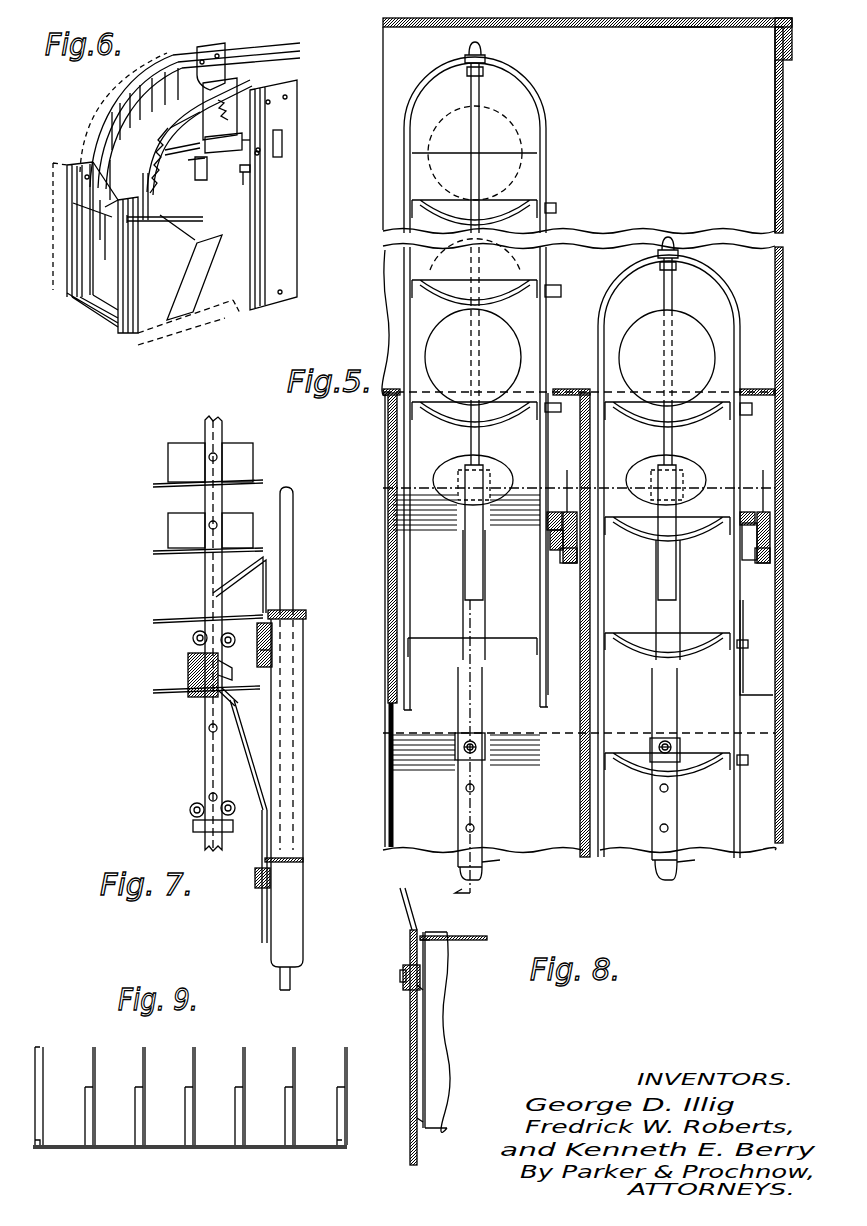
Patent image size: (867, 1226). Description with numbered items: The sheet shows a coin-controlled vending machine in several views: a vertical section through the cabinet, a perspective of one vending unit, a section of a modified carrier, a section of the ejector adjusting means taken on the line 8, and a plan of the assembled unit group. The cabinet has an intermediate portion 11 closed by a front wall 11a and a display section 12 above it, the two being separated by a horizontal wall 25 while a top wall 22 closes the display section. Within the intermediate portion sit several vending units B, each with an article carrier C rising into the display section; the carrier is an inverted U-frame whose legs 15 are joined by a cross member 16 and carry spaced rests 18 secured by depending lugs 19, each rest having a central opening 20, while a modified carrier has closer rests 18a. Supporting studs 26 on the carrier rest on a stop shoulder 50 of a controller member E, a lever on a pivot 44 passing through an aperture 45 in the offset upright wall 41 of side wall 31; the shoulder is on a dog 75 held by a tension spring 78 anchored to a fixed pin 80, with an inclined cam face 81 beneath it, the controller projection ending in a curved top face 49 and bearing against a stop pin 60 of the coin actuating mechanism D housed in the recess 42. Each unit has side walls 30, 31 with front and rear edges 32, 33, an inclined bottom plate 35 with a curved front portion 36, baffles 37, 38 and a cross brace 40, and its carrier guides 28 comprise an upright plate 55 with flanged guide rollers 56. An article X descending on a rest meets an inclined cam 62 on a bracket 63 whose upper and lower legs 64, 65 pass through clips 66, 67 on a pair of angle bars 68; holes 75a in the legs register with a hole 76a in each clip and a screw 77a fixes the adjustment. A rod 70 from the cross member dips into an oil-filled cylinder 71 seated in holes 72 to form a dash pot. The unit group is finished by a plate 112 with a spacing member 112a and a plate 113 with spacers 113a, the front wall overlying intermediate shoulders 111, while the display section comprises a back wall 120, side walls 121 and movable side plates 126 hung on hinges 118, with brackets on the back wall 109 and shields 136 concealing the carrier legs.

In FIG. 5, the section line 8 is at (471, 753).
In FIG. 8, the section line 8 is at (470, 883).
In FIG. 5, the intermediate portion 11 is at (790, 612).
In FIG. 9, the front wall 11a is at (213, 1148).
In FIG. 5, the display section 12 is at (783, 185).
In FIG. 5, the legs 15 is at (730, 428).
In FIG. 7, the legs 15 is at (205, 428).
In FIG. 5, the cross member 16 is at (518, 78).
In FIG. 5, the rests 18 is at (505, 210).
In FIG. 7, the rests 18a is at (170, 615).
In FIG. 5, the depending lugs 19 is at (440, 300).
In FIG. 5, the central opening 20 is at (458, 275).
In FIG. 5, the top wall 22 is at (690, 27).
In FIG. 5, the horizontal wall 25 is at (568, 385).
In FIG. 5, the supporting studs 26 is at (613, 200).
In FIG. 7, the supporting studs 26 is at (217, 457).
In FIG. 5, the carrier guides 28 is at (758, 603).
In FIG. 7, the carrier guides 28 is at (193, 826).
In FIG. 6, the side wall 30 is at (104, 125).
In FIG. 5, the side wall 30 is at (580, 833).
In FIG. 7, the side wall 30 is at (354, 788).
In FIG. 9, the side wall 30 is at (145, 1105).
In FIG. 6, the side wall 31 is at (93, 100).
In FIG. 5, the side wall 31 is at (388, 800).
In FIG. 9, the side wall 31 is at (285, 1128).
In FIG. 6, the front edge 32 is at (72, 255).
In FIG. 6, the rear edge 33 is at (268, 60).
In FIG. 6, the bottom plate 35 is at (138, 285).
In FIG. 6, the curved front portion 36 is at (105, 305).
In FIG. 6, the guide plate 37 is at (145, 158).
In FIG. 6, the second baffle 38 is at (120, 180).
In FIG. 6, the cross brace 40 is at (185, 112).
In FIG. 6, the upright wall 41 is at (252, 258).
In FIG. 9, the upright wall 41 is at (290, 1082).
In FIG. 6, the recess 42 is at (235, 320).
In FIG. 6, the pivot 44 is at (260, 150).
In FIG. 5, the pivot 44 is at (577, 540).
In FIG. 6, the aperture 45 is at (245, 178).
In FIG. 6, the top face 49 is at (238, 100).
In FIG. 5, the stop shoulder 50 is at (550, 545).
In FIG. 7, the stop shoulder 50 is at (232, 672).
In FIG. 5, the upright plate 55 is at (397, 595).
In FIG. 7, the guide rollers 56 is at (220, 645).
In FIG. 6, the stop pin 60 is at (215, 146).
In FIG. 5, the cam 62 is at (498, 467).
In FIG. 7, the cam 62 is at (238, 575).
In FIG. 5, the bracket 63 is at (470, 600).
In FIG. 7, the bracket 63 is at (240, 765).
In FIG. 7, the upper leg 64 is at (240, 585).
In FIG. 5, the lower leg 65 is at (458, 810).
In FIG. 7, the lower leg 65 is at (262, 840).
In FIG. 8, the lower leg 65 is at (410, 1028).
In FIG. 7, the clip 66 is at (272, 633).
In FIG. 5, the clip 67 is at (485, 745).
In FIG. 7, the clip 67 is at (270, 878).
In FIG. 8, the clip 67 is at (403, 972).
In FIG. 6, the angle bars 68 is at (200, 55).
In FIG. 5, the angle bars 68 is at (579, 633).
In FIG. 7, the angle bars 68 is at (306, 613).
In FIG. 8, the angle bars 68 is at (487, 938).
In FIG. 5, the rod 70 is at (481, 100).
In FIG. 7, the rod 70 is at (293, 526).
In FIG. 5, the cylinder 71 is at (599, 863).
In FIG. 7, the cylinder 71 is at (303, 760).
In FIG. 8, the cylinder 71 is at (436, 1032).
In FIG. 8, the holes 72 is at (455, 943).
In FIG. 6, the dog 75 is at (198, 168).
In FIG. 5, the holes 75a is at (474, 788).
In FIG. 8, the holes 75a is at (418, 1120).
In FIG. 8, the hole 76a is at (420, 988).
In FIG. 5, the screw 77a is at (472, 742).
In FIG. 7, the screw 77a is at (270, 650).
In FIG. 8, the screw 77a is at (400, 978).
In FIG. 6, the tension spring 78 is at (235, 85).
In FIG. 6, the fixed pin 80 is at (191, 267).
In FIG. 7, the cam face 81 is at (236, 705).
In FIG. 5, the back wall 109 is at (759, 833).
In FIG. 6, the intermediate shoulders 111 is at (72, 170).
In FIG. 5, the finishing plate 112 is at (783, 812).
In FIG. 9, the finishing plate 112 is at (347, 1072).
In FIG. 9, the spacing member 112a is at (342, 1138).
In FIG. 9, the finishing plate 113 is at (35, 1060).
In FIG. 9, the spacers 113a is at (50, 1095).
In FIG. 5, the hinges 118 is at (775, 40).
In FIG. 5, the back wall 120 is at (677, 147).
In FIG. 5, the side walls 121 is at (775, 143).
In FIG. 5, the side plates 126 is at (783, 330).
In FIG. 5, the shields 136 is at (570, 27).
In FIG. 6, the vending units B is at (313, 104).
In FIG. 9, the vending units B is at (129, 1096).
In FIG. 5, the article carrier C is at (548, 123).
In FIG. 7, the article carrier C is at (225, 428).
In FIG. 6, the coin actuating mechanism D is at (174, 211).
In FIG. 6, the controller member E is at (250, 168).
In FIG. 5, the controller member E is at (660, 482).
In FIG. 7, the controller member E is at (188, 668).
In FIG. 5, the article X is at (500, 313).
In FIG. 7, the article X is at (170, 515).